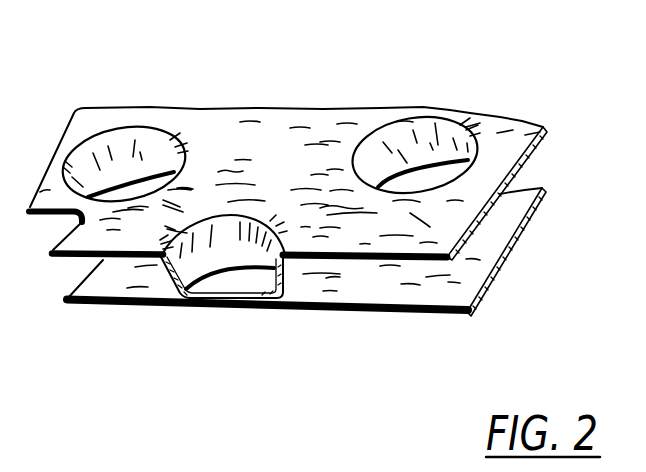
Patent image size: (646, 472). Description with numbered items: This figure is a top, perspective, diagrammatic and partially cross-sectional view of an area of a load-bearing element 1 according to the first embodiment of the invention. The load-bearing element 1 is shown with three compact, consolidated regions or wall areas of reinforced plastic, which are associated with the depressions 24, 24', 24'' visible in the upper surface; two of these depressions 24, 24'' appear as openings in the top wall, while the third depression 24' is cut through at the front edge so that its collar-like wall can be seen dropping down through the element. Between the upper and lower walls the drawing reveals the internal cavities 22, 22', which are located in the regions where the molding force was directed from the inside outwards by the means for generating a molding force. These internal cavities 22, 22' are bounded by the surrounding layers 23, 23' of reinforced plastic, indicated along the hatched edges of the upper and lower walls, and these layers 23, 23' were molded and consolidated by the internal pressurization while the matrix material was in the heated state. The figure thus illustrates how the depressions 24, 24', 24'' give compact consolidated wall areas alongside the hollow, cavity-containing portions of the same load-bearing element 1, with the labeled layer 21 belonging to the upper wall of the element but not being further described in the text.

The load-bearing element 1 is at (538, 71).
The upper sheet 21 is at (298, 133).
The internal cavity 22 is at (296, 292).
The internal cavity 22' is at (387, 326).
The surrounding layer of reinforced plastic 23 is at (506, 225).
The surrounding layer of reinforced plastic 23' is at (506, 285).
The depression 24 is at (123, 119).
The depression 24' is at (223, 163).
The depression 24'' is at (415, 115).